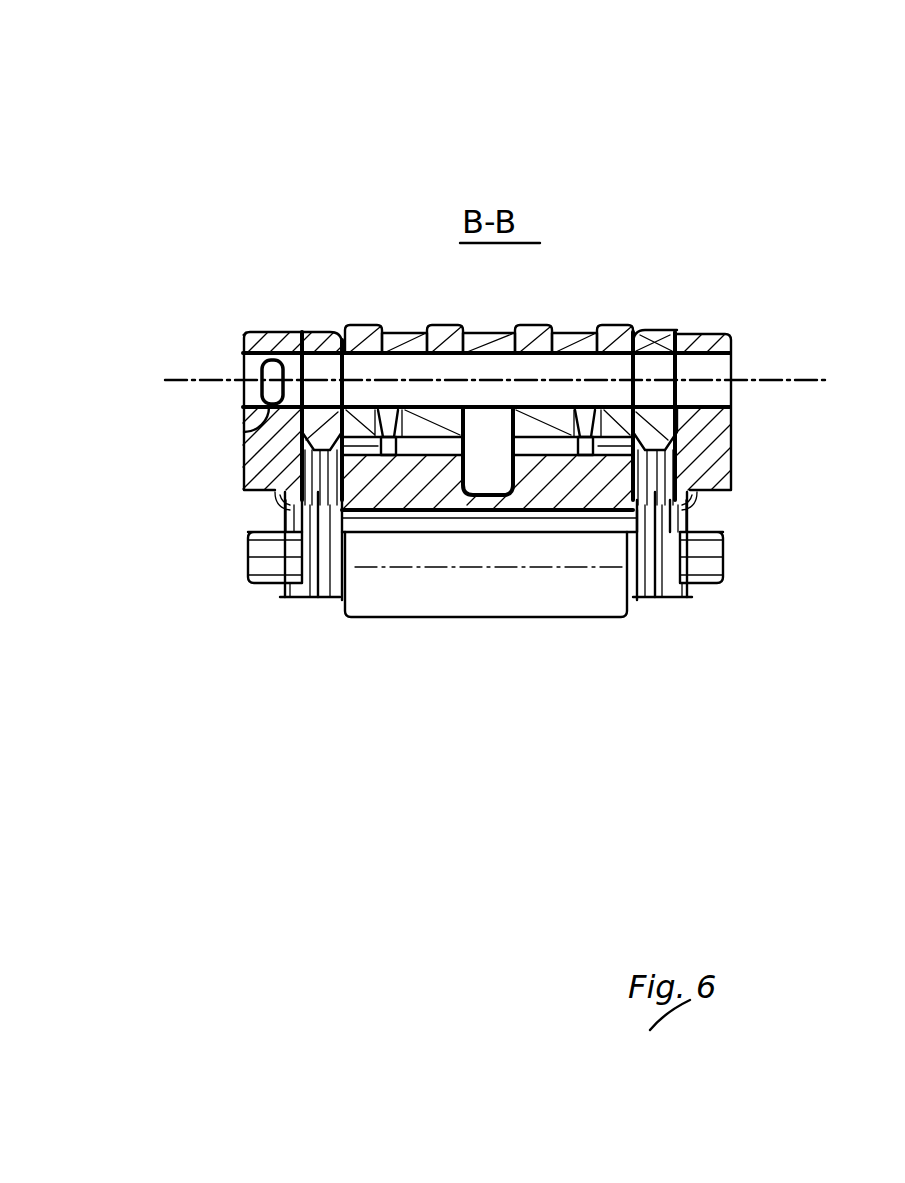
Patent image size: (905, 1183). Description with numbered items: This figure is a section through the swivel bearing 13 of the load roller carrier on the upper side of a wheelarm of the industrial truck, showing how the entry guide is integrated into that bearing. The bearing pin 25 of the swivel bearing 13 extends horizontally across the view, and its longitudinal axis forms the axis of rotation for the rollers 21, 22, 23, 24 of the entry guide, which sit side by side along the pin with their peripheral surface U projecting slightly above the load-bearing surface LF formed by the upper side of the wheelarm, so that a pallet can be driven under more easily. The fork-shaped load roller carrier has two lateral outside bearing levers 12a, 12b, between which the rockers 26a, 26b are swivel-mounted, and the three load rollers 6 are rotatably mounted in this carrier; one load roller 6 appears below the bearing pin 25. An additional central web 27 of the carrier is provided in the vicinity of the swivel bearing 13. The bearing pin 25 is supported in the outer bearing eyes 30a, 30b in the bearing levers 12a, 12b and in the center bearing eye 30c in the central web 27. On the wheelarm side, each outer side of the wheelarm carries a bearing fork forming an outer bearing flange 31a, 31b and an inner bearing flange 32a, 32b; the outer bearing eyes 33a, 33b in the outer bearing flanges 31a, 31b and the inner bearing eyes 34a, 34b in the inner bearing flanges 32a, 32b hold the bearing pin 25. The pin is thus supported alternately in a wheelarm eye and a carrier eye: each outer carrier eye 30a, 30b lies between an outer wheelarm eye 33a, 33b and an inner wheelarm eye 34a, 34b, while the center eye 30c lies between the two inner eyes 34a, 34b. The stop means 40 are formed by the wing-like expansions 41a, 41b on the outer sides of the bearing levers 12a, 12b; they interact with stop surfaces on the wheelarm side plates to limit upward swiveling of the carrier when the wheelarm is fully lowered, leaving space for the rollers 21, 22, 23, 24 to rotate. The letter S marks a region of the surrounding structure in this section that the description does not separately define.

The swivel bearing 13 is at (172, 378).
The roller 21 is at (352, 322).
The roller 22 is at (433, 323).
The roller 23 is at (546, 321).
The roller 24 is at (621, 325).
The bearing pin 25 is at (247, 396).
The central web 27 is at (497, 425).
The outer bearing eye 30a is at (323, 330).
The outer bearing eye 30b is at (663, 327).
The center bearing eye 30c is at (490, 323).
The outer bearing flange 31a is at (246, 330).
The outer bearing flange 31b is at (722, 327).
The inner bearing flange 32a is at (402, 323).
The inner bearing flange 32b is at (583, 323).
The outer bearing eye 33a is at (247, 432).
The outer bearing eye 33b is at (705, 327).
The inner bearing eye 34a is at (396, 414).
The inner bearing eye 34b is at (584, 415).
The load roller 6 is at (483, 607).
The bearing lever 12a is at (288, 597).
The bearing lever 12b is at (673, 600).
The rocker 26a is at (318, 600).
The rocker 26b is at (656, 600).
The stop means 40 is at (245, 583).
The wing-like expansion 41a is at (247, 555).
The wing-like expansion 41b is at (722, 555).
The housing shell S is at (247, 470).
The peripheral surface U is at (362, 320).
The load-bearing surface LF is at (283, 322).